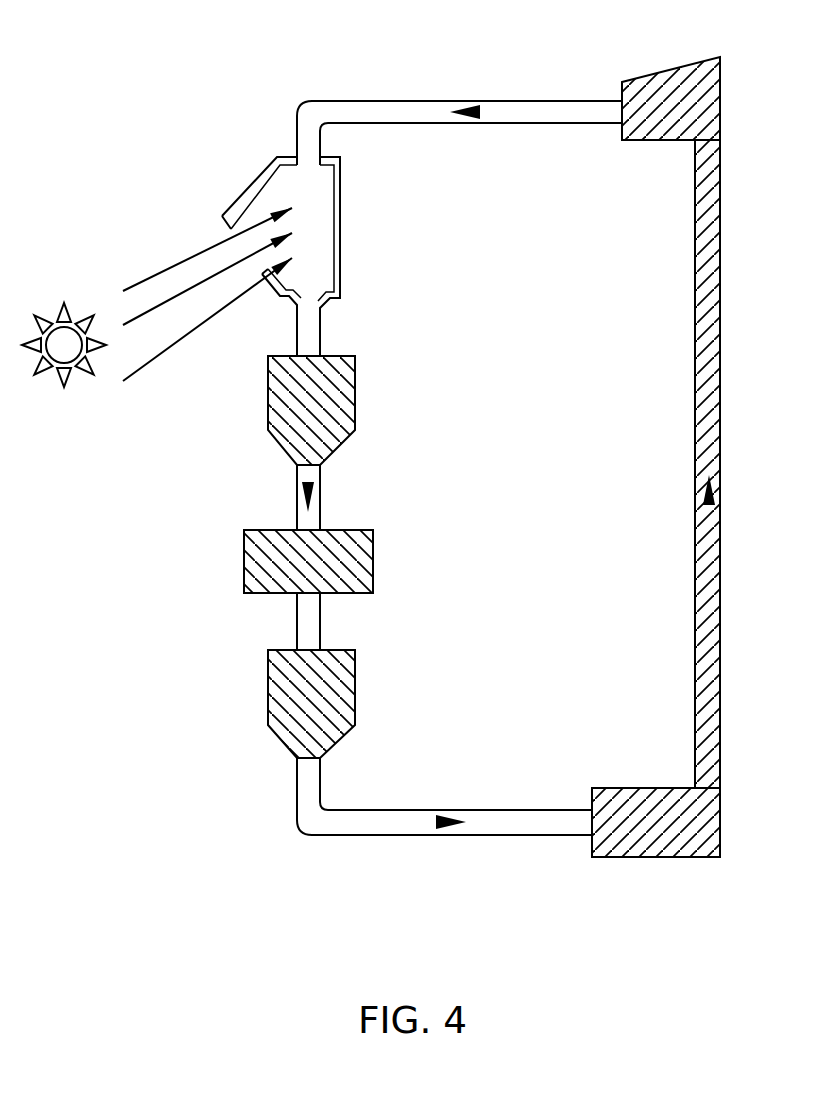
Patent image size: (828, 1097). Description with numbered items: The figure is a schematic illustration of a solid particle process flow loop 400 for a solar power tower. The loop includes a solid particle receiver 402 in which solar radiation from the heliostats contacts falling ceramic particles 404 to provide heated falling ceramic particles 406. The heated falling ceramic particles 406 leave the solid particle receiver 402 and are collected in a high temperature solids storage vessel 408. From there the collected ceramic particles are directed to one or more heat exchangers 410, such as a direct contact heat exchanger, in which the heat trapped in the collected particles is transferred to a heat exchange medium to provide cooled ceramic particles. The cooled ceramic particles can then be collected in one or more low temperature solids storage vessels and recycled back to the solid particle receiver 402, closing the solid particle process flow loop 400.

The solid particle process flow loop 400 is at (192, 75).
The solid particle receiver 402 is at (340, 238).
The falling ceramic particles 404 is at (322, 262).
The heated falling ceramic particles 406 is at (318, 327).
The high temperature solids storage vessel 408 is at (343, 442).
The heat exchanger 410 is at (244, 562).